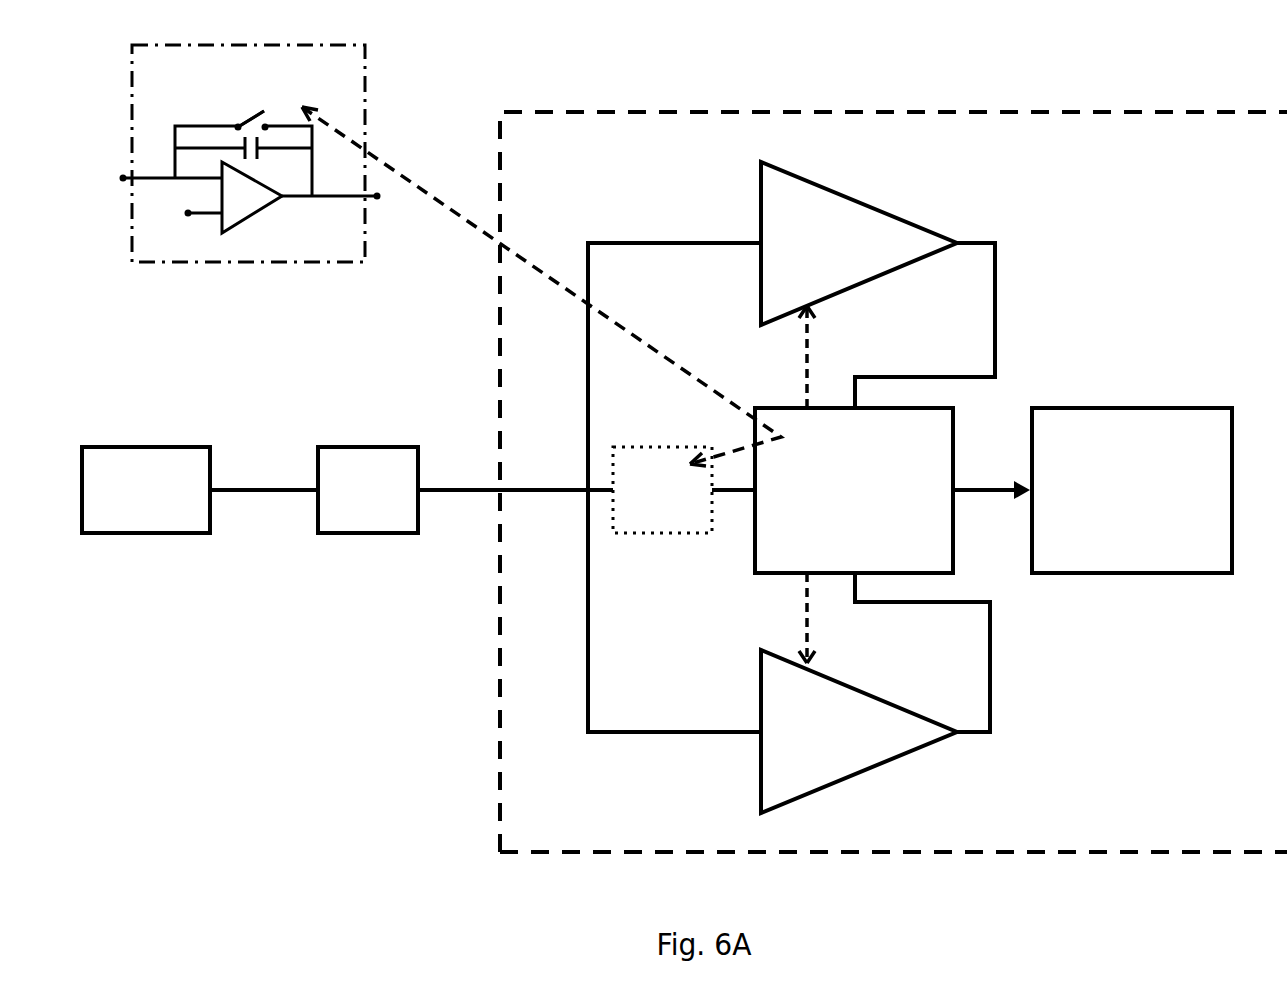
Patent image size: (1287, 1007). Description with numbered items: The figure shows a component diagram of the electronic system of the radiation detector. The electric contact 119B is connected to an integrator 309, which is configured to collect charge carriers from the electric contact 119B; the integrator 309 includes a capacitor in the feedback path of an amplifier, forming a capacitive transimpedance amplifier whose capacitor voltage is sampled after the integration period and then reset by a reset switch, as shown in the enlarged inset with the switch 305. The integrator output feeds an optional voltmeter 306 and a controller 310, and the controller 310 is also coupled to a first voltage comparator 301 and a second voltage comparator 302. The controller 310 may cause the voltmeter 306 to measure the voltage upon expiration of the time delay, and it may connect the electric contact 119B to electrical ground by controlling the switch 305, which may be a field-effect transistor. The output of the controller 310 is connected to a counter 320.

The electric contact 119B is at (146, 490).
The integrator 309 is at (269, 289).
The switch 305 is at (272, 109).
The voltmeter 306 is at (541, 320).
The controller 310 is at (892, 484).
The counter 320 is at (1132, 490).
The first voltage comparator 301 is at (878, 285).
The second voltage comparator 302 is at (875, 693).